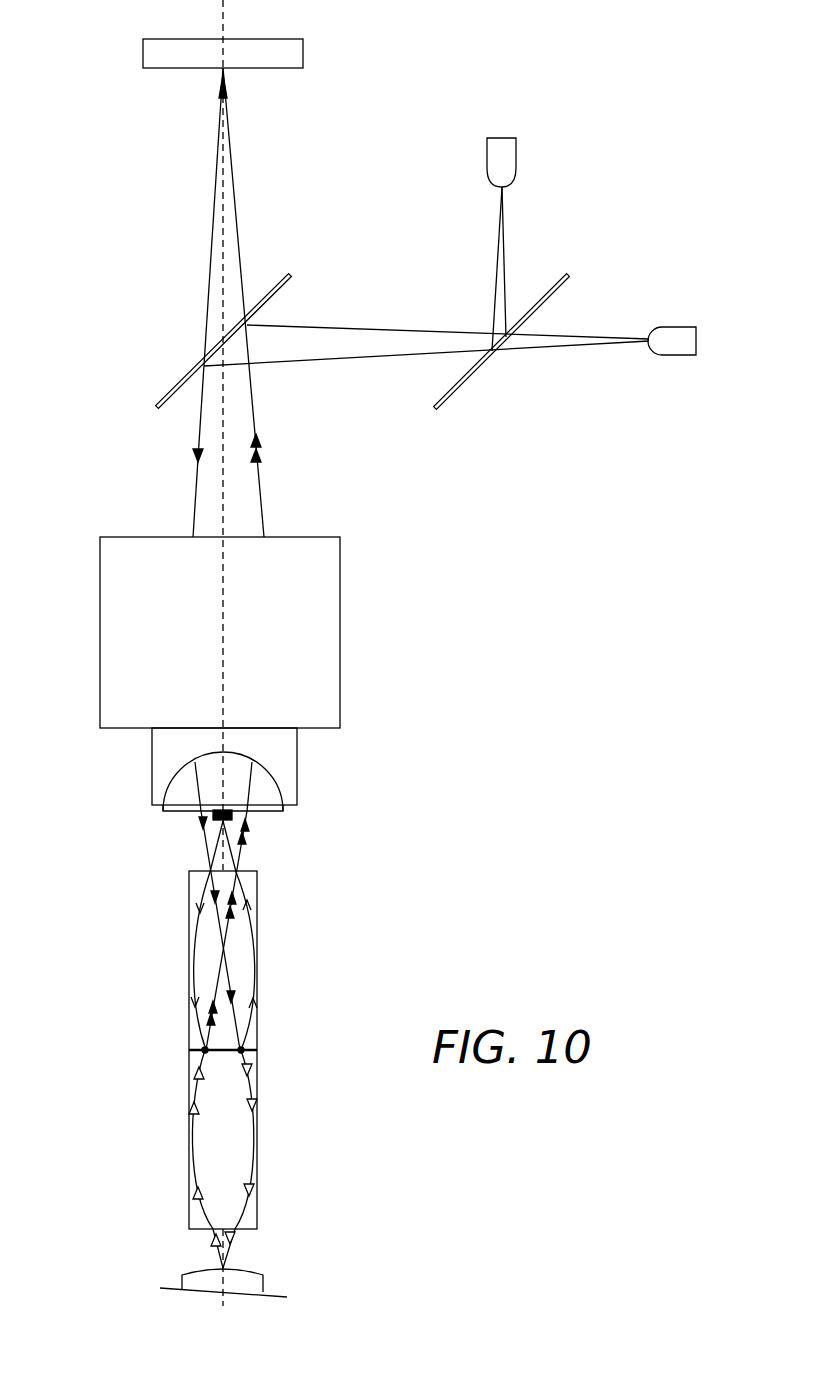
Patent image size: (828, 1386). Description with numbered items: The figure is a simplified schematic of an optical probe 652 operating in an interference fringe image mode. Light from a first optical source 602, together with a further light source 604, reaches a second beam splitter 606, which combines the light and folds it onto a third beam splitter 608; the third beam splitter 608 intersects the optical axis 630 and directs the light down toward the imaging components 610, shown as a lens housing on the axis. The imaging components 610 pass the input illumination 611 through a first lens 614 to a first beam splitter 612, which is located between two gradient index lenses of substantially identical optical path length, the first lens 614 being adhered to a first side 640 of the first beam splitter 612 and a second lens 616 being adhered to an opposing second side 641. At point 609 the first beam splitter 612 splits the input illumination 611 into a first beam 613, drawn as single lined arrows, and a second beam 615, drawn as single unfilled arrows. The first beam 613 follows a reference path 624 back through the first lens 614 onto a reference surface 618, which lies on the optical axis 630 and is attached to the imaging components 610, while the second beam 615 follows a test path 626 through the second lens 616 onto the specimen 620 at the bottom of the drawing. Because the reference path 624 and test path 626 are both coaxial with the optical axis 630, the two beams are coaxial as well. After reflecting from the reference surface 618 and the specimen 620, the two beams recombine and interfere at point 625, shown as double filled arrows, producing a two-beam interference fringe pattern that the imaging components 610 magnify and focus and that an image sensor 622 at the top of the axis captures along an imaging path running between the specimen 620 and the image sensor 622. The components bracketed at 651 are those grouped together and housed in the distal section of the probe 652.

The first optical source 602 is at (500, 153).
The light source 604 is at (673, 343).
The second beam splitter 606 is at (472, 386).
The third beam splitter 608 is at (285, 290).
The point 609 is at (257, 1052).
The imaging components 610 is at (242, 638).
The input illumination 611 is at (205, 840).
The first beam splitter 612 is at (252, 1043).
The first beam 613 is at (251, 985).
The first lens 614 is at (257, 950).
The second beam 615 is at (248, 1088).
The second lens 616 is at (257, 1140).
The reference surface 618 is at (233, 815).
The specimen 620 is at (240, 1268).
The image sensor 622 is at (241, 66).
The reference path 624 is at (163, 825).
The point 625 is at (204, 1047).
The test path 626 is at (163, 1050).
The optical axis 630 is at (224, 673).
The first side 640 is at (244, 1044).
The second side 641 is at (203, 1052).
The distal section 651 is at (98, 872).
The optical probe 652 is at (466, 91).